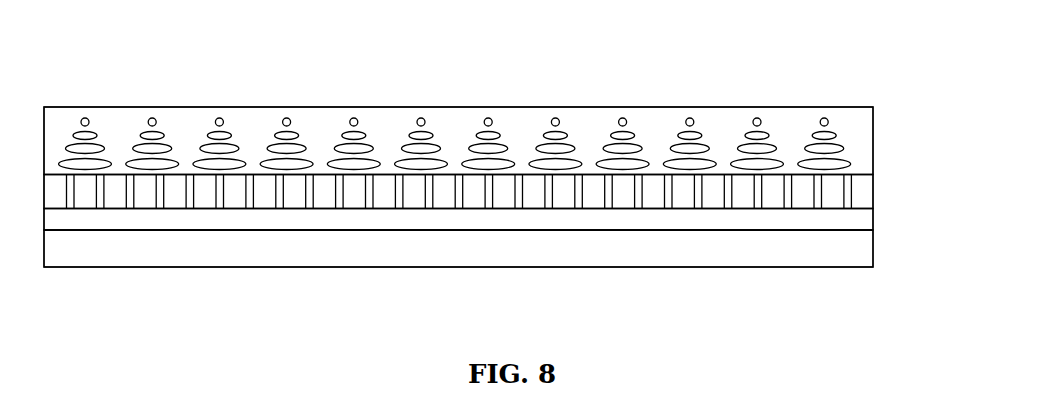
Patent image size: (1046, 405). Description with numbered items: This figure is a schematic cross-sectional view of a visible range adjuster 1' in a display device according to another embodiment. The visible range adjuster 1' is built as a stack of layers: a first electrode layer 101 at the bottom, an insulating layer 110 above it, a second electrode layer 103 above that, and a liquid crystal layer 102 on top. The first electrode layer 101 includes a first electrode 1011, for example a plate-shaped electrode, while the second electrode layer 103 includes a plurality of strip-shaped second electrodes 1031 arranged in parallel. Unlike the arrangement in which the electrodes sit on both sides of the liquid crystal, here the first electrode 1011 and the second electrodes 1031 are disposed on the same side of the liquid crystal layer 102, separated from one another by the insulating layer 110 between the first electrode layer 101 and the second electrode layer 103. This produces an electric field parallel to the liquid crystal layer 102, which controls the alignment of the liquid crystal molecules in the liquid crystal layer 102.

The visible range adjuster 1' is at (458, 143).
The first electrode layer 101 is at (881, 245).
The first electrode 1011 is at (640, 247).
The liquid crystal layer 102 is at (881, 142).
The second electrode layer 103 is at (504, 246).
The second electrode 1031 is at (567, 191).
The insulating layer 110 is at (881, 219).